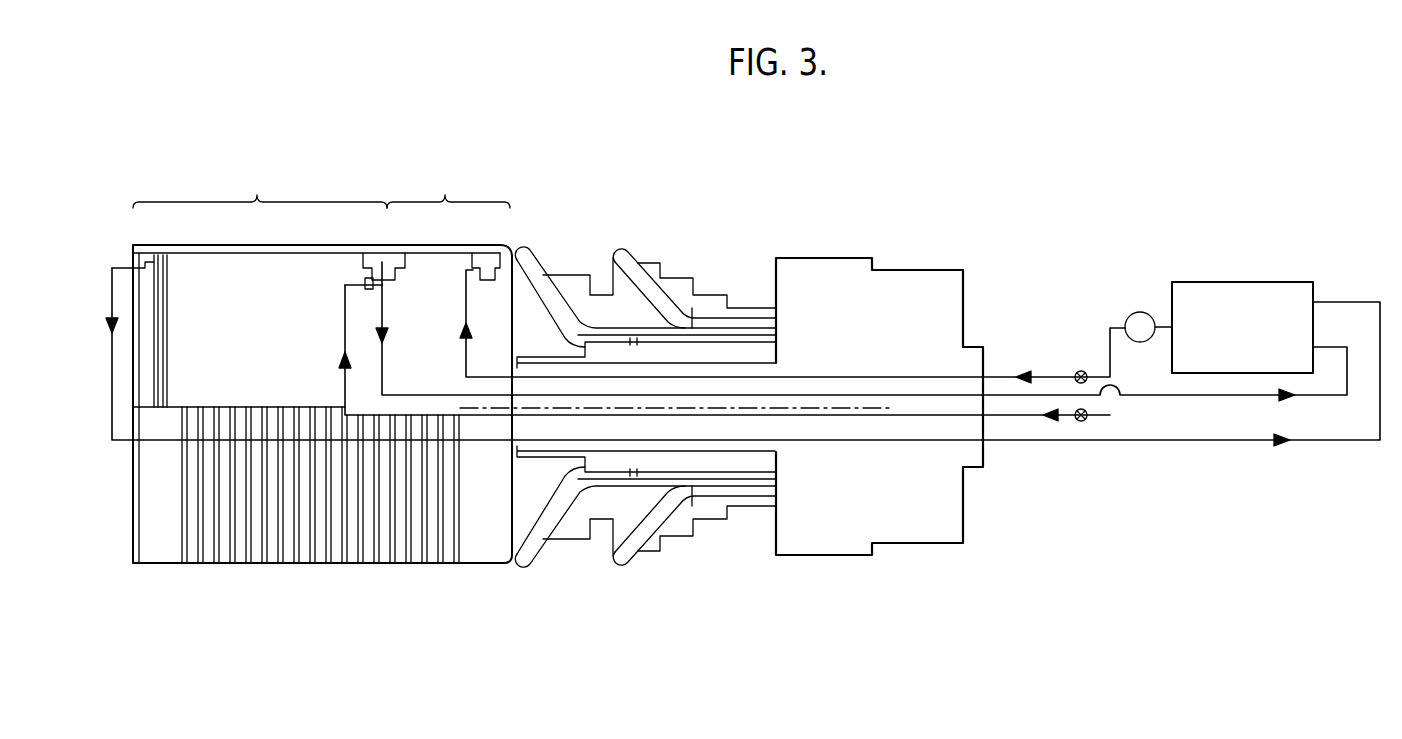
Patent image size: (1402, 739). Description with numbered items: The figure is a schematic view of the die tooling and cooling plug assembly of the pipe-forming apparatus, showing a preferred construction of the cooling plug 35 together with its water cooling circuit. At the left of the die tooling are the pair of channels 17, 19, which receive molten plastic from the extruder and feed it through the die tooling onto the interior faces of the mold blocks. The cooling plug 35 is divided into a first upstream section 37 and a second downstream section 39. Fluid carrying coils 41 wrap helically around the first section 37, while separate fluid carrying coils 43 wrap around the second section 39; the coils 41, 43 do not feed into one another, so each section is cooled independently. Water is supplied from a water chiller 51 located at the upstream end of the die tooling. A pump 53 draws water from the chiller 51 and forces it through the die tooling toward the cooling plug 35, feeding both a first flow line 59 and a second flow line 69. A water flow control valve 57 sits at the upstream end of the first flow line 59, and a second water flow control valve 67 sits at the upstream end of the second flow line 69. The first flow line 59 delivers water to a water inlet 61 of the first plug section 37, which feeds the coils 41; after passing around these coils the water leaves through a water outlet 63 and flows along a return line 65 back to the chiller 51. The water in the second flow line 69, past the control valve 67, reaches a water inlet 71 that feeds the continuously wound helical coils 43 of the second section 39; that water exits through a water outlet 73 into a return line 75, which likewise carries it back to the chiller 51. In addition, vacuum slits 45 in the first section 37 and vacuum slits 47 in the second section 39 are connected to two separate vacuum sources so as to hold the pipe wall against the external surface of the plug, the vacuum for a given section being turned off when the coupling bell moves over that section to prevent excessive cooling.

The channel 17 is at (635, 260).
The channel 19 is at (545, 273).
The cooling plug 35 is at (367, 160).
The first upstream section 37 is at (448, 185).
The second downstream section 39 is at (260, 185).
The fluid carrying coils 41 is at (420, 560).
The fluid carrying coils 43 is at (283, 556).
The vacuum slits 45 is at (440, 246).
The vacuum slits 47 is at (287, 245).
The water chiller 51 is at (1240, 292).
The pump 53 is at (1140, 312).
The water flow control valve 57 is at (1082, 371).
The first flow line 59 is at (464, 306).
The water inlet 61 is at (496, 281).
The water outlet 63 is at (406, 266).
The return line 65 is at (384, 366).
The water flow control valve 67 is at (1080, 422).
The second flow line 69 is at (343, 318).
The water inlet 71 is at (362, 284).
The water outlet 73 is at (162, 266).
The return line 75 is at (113, 363).